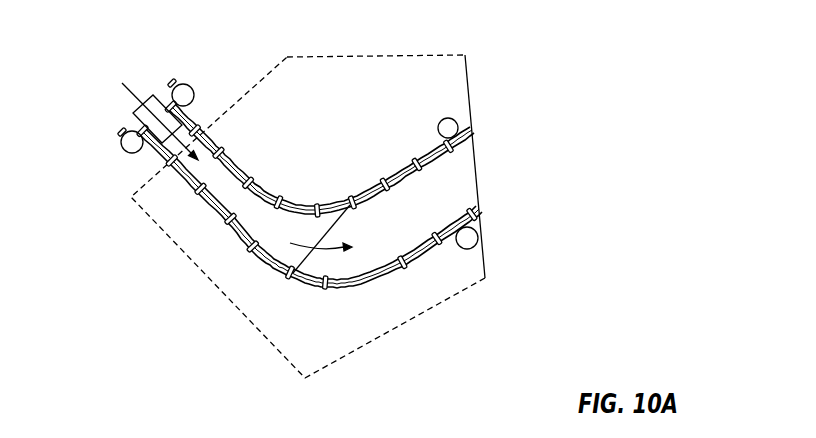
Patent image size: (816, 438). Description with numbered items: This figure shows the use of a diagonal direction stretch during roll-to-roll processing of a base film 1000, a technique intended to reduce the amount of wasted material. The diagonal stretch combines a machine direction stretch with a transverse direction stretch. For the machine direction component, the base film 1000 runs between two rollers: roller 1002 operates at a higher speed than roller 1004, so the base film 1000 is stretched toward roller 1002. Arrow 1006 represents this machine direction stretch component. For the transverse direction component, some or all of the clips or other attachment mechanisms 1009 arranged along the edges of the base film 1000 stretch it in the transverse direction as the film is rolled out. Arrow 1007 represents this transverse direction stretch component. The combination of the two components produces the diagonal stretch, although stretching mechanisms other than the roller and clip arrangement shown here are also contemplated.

The base film 1000 is at (305, 205).
The roller 1002 is at (446, 120).
The roller 1004 is at (188, 84).
The arrow 1006 is at (137, 108).
The arrow 1007 is at (337, 250).
The clips or other attachment mechanisms 1009 is at (385, 180).